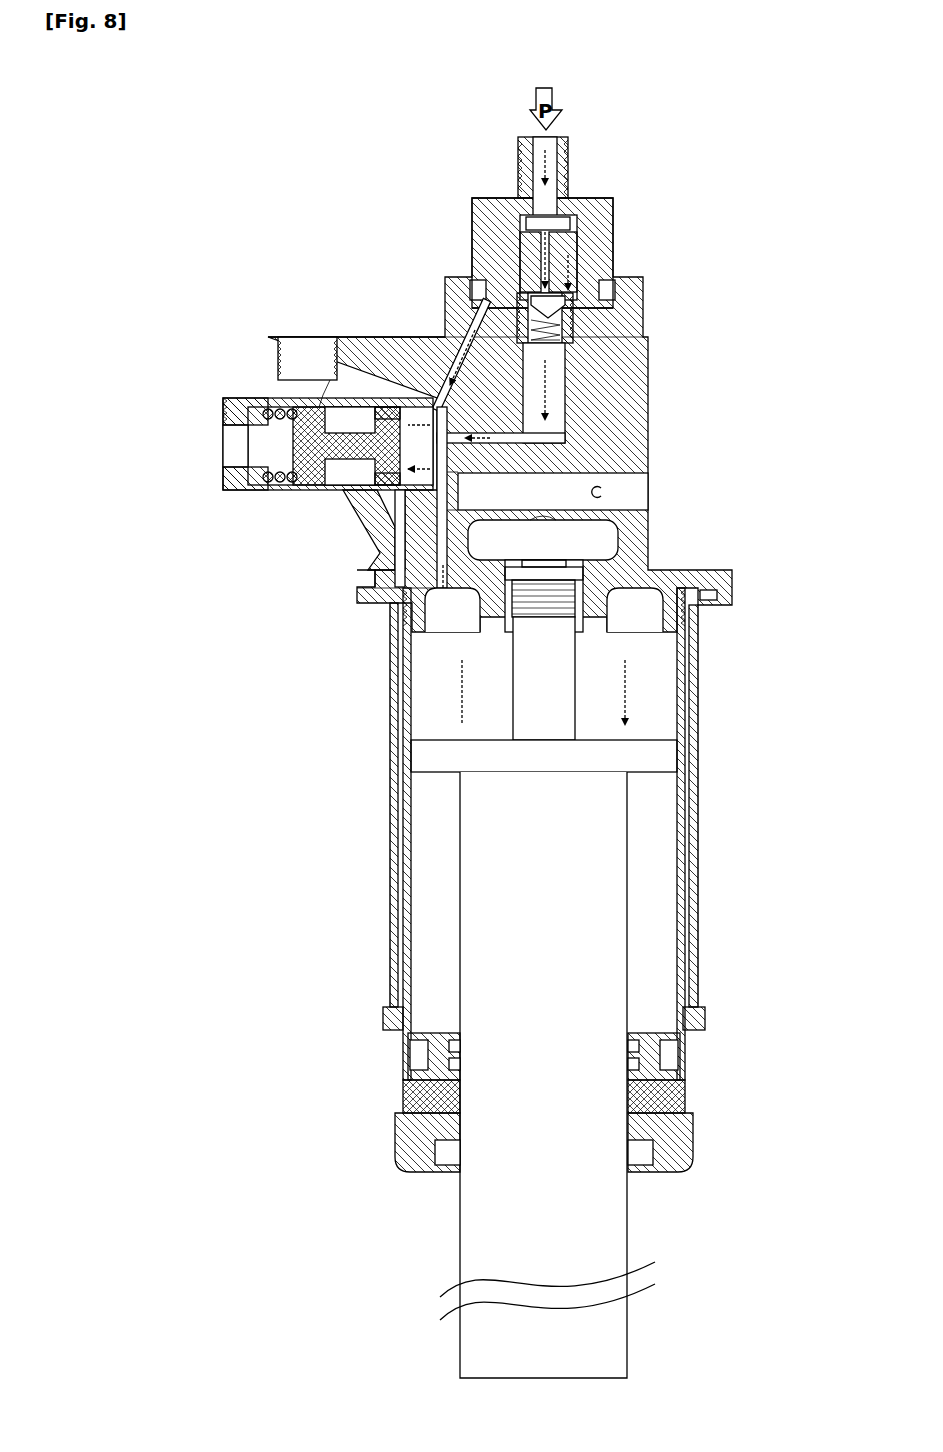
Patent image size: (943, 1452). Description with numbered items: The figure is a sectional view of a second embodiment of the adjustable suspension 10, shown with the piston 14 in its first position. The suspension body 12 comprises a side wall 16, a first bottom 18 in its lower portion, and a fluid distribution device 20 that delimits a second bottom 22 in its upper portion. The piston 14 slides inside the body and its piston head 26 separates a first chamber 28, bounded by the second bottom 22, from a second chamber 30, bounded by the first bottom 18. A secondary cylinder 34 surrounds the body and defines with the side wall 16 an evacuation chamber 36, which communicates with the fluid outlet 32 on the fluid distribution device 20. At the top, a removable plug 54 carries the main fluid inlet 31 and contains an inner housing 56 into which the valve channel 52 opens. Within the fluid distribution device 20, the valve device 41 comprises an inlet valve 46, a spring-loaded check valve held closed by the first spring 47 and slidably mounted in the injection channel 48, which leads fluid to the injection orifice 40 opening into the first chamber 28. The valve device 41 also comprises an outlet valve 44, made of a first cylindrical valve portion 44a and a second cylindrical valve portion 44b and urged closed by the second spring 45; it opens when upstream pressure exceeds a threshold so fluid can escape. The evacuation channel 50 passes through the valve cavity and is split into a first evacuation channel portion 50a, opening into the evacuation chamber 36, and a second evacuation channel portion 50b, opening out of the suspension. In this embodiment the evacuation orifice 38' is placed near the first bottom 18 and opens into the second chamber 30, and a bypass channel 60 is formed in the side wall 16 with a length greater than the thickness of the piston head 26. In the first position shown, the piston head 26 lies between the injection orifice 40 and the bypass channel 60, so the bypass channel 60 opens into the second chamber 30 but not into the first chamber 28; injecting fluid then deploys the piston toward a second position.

The adjustable suspension 10 is at (722, 200).
The suspension body 12 is at (690, 1048).
The piston 14 is at (605, 1236).
The side wall 16 is at (690, 760).
The first bottom 18 is at (660, 1045).
The fluid distribution device 20 is at (650, 400).
The second bottom 22 is at (636, 572).
The piston head 26 is at (663, 753).
The first chamber 28 is at (655, 655).
The second chamber 30 is at (663, 922).
The main fluid inlet 31 is at (570, 165).
The fluid outlet 32 is at (298, 350).
The secondary cylinder 34 is at (392, 1003).
The evacuation chamber 36 is at (398, 800).
The evacuation orifice 38' is at (544, 1033).
The injection orifice 40 is at (466, 565).
The valve device 41 is at (475, 200).
The outlet valve 44 is at (327, 444).
The first cylindrical valve portion 44a is at (383, 408).
The second cylindrical valve portion 44b is at (262, 400).
The second spring 45 is at (272, 486).
The inlet valve 46 is at (534, 313).
The first spring 47 is at (574, 332).
The injection channel 48 is at (553, 388).
The evacuation channel 50 is at (395, 588).
The first evacuation channel portion 50a is at (380, 520).
The second evacuation channel portion 50b is at (330, 380).
The valve channel 52 is at (450, 322).
The removable plug 54 is at (602, 208).
The inner housing 56 is at (516, 268).
The bypass channel 60 is at (410, 867).